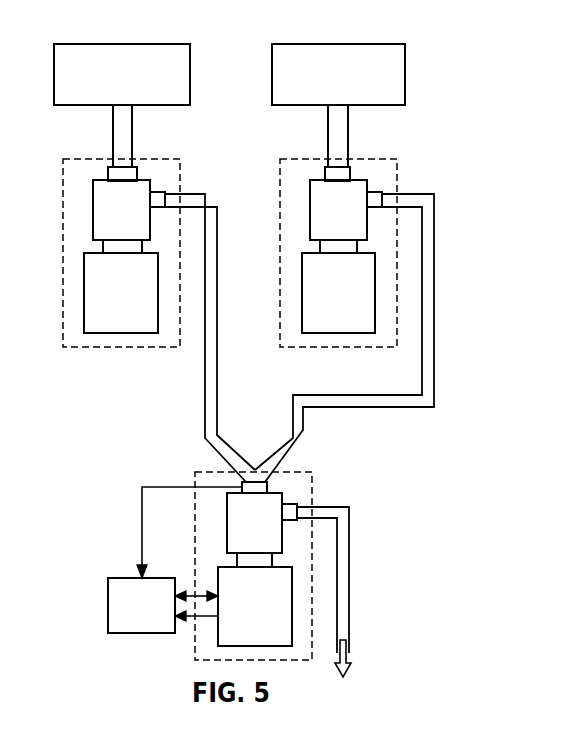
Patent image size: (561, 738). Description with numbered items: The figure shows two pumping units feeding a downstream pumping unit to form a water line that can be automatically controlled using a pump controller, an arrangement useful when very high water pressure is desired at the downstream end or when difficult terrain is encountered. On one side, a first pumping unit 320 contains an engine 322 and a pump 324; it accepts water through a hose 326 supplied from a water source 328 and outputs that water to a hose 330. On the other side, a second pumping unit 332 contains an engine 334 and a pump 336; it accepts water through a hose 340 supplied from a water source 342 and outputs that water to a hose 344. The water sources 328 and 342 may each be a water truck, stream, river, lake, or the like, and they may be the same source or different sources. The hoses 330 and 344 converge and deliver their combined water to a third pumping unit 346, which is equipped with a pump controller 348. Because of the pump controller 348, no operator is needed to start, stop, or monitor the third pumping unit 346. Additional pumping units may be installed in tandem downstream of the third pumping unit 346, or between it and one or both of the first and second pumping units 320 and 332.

The water source 342 is at (118, 44).
The hose 340 is at (132, 143).
The second pumping unit 332 is at (181, 181).
The pump 336 is at (101, 222).
The engine 334 is at (101, 306).
The water source 328 is at (335, 44).
The hose 326 is at (348, 143).
The first pumping unit 320 is at (400, 179).
The pump 324 is at (318, 222).
The engine 322 is at (318, 306).
The hose 344 is at (217, 383).
The hose 330 is at (434, 383).
The third pumping unit 346 is at (312, 492).
The pump controller 348 is at (108, 606).